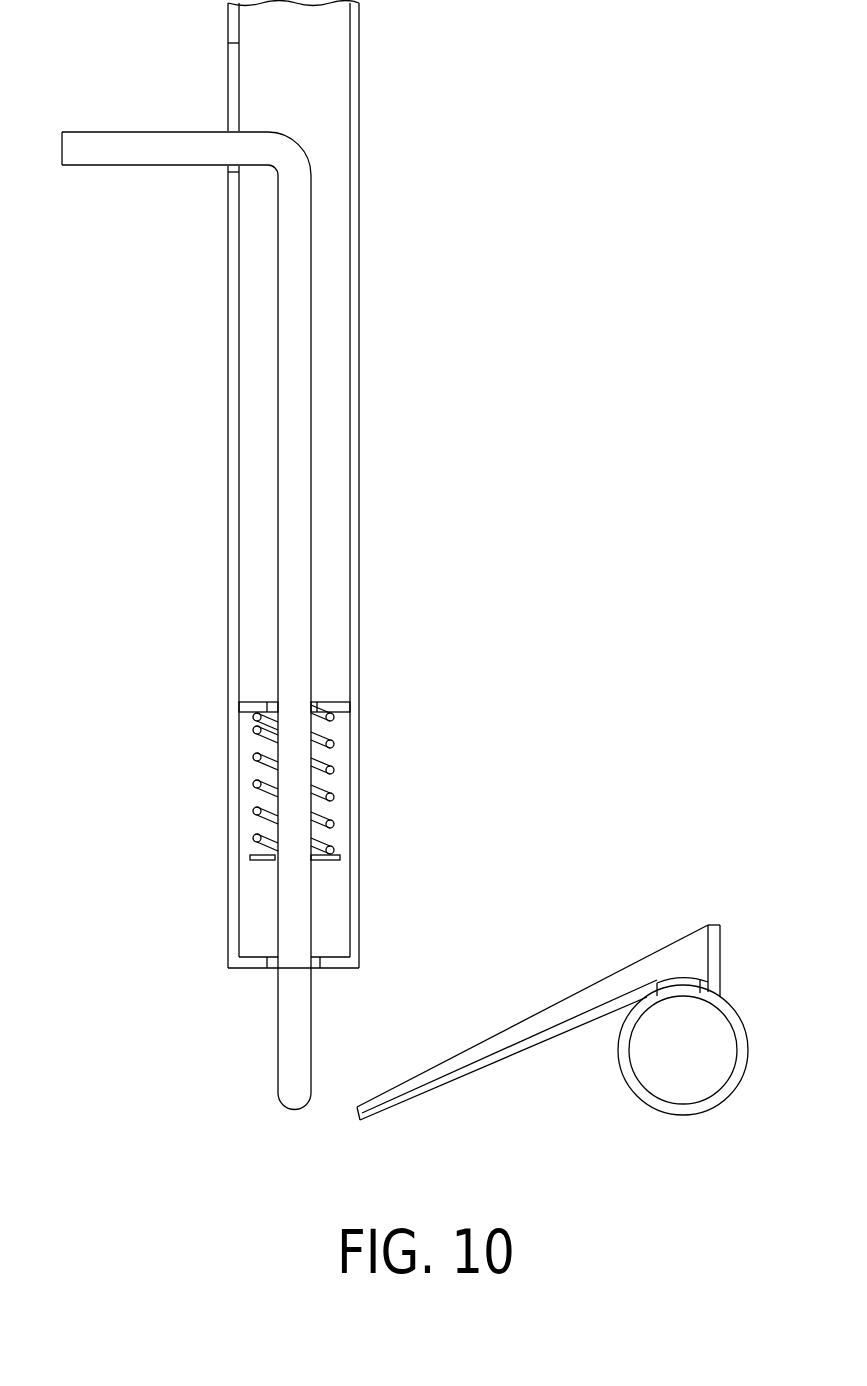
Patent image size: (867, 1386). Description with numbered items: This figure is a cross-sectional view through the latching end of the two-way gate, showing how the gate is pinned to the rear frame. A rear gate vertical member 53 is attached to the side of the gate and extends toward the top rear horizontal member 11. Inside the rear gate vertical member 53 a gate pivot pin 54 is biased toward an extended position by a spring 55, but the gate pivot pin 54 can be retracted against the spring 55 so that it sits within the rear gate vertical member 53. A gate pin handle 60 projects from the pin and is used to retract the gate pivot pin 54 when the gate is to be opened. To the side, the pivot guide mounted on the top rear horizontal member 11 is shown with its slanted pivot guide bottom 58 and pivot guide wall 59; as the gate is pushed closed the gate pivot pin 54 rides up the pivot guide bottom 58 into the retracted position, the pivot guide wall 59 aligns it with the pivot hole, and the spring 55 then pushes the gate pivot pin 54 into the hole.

The rear gate vertical member 53 is at (360, 143).
The gate pin handle 60 is at (70, 167).
The gate pivot pin 54 is at (312, 1043).
The spring 55 is at (352, 731).
The pivot guide bottom 58 is at (518, 1040).
The pivot guide wall 59 is at (672, 943).
The top rear horizontal member 11 is at (643, 1107).